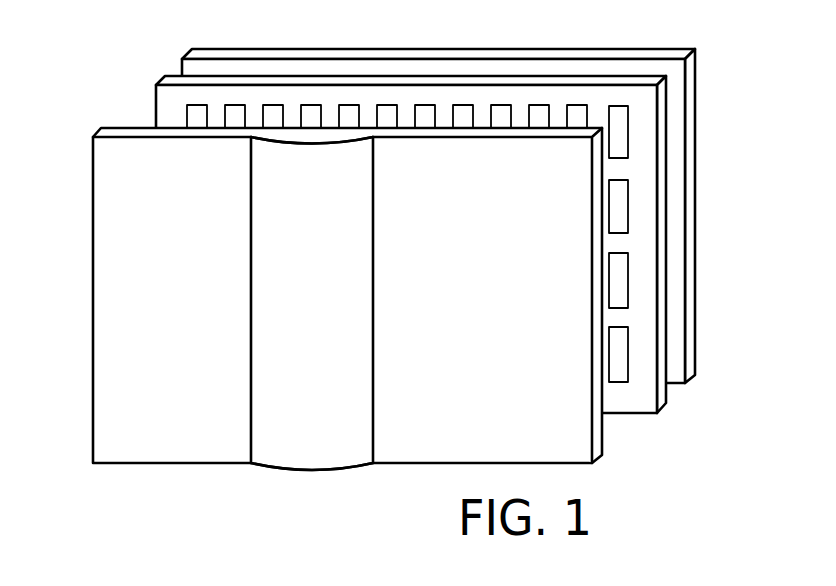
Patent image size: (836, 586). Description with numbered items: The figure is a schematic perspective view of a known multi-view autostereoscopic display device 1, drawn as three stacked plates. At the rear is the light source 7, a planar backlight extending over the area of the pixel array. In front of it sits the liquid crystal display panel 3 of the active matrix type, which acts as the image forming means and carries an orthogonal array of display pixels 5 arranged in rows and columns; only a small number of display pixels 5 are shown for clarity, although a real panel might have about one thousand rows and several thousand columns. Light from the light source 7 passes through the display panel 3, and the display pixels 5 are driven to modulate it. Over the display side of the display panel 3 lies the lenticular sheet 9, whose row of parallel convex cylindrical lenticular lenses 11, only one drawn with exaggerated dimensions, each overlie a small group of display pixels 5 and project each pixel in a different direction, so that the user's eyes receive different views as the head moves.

The autostereoscopic display device 1 is at (80, 85).
The liquid crystal display panel 3 is at (668, 404).
The display pixels 5 is at (628, 133).
The light source 7 is at (697, 376).
The lenticular sheet 9 is at (604, 456).
The lenticular lenses 11 is at (307, 455).